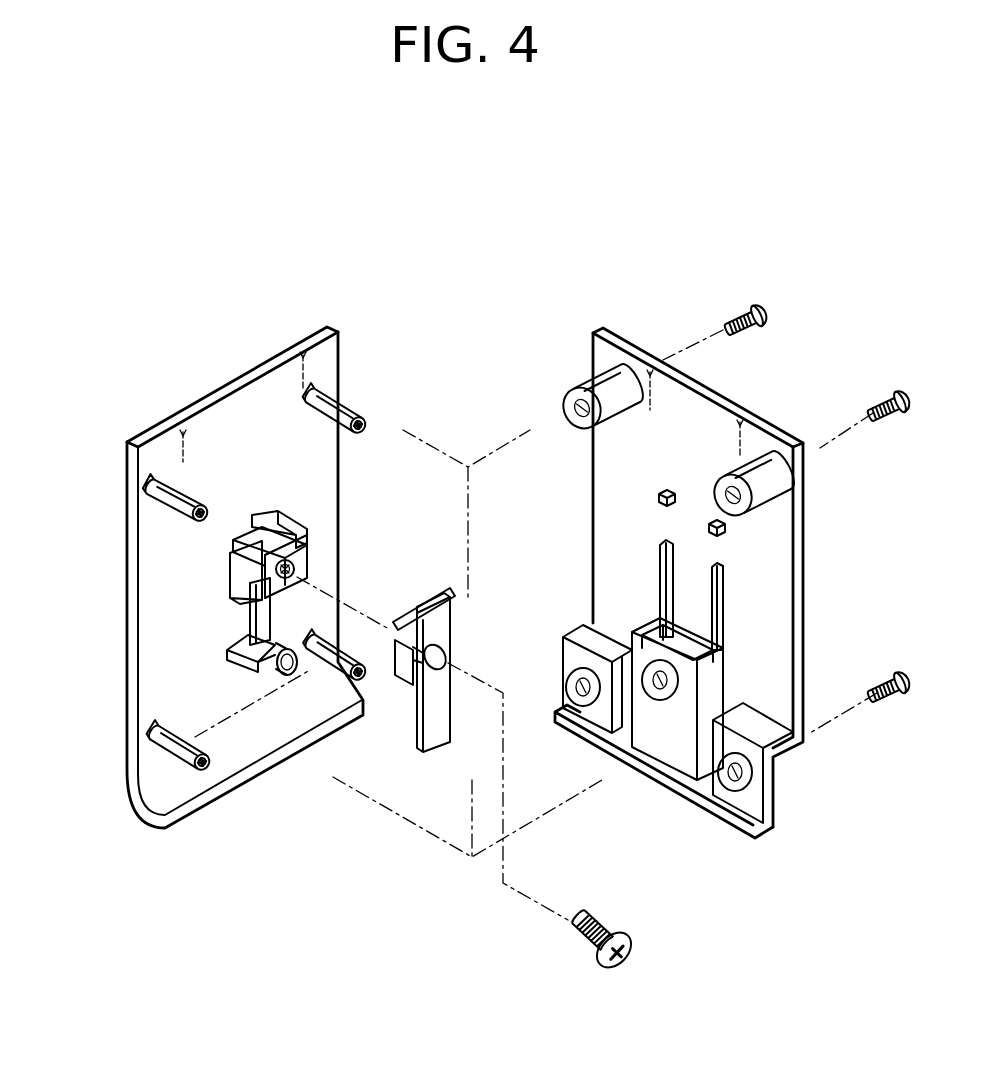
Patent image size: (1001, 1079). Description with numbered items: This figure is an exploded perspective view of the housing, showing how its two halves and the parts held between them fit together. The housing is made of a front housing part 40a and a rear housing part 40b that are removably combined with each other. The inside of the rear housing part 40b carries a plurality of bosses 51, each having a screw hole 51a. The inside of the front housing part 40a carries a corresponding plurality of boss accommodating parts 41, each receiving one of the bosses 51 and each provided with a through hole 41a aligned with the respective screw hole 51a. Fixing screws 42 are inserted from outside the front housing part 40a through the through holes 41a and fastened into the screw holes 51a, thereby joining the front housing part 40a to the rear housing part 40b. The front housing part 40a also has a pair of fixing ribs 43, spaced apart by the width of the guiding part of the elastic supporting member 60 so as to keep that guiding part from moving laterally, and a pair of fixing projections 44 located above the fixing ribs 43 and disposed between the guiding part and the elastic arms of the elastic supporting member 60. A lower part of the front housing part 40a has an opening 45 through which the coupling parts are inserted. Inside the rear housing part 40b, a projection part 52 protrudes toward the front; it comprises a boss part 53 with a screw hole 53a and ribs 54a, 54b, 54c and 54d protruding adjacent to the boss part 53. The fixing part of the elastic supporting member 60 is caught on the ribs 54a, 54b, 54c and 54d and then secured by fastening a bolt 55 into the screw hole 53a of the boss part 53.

The front housing part 40a is at (591, 326).
The rear housing part 40b is at (349, 326).
The boss accommodating part 41 is at (579, 391).
The through hole 41a is at (583, 413).
The fixing screw 42 is at (896, 394).
The fixing rib 43 is at (718, 606).
The fixing projection 44 is at (713, 530).
The opening 45 is at (702, 656).
The boss 51 is at (338, 399).
The screw hole 51a is at (366, 426).
The projection part 52 is at (216, 598).
The boss part 53 is at (256, 576).
The screw hole 53a is at (296, 569).
The rib 54a is at (240, 538).
The rib 54b is at (238, 601).
The rib 54c is at (255, 629).
The rib 54d is at (262, 651).
The bolt 55 is at (620, 968).
The elastic supporting member 60 is at (453, 588).